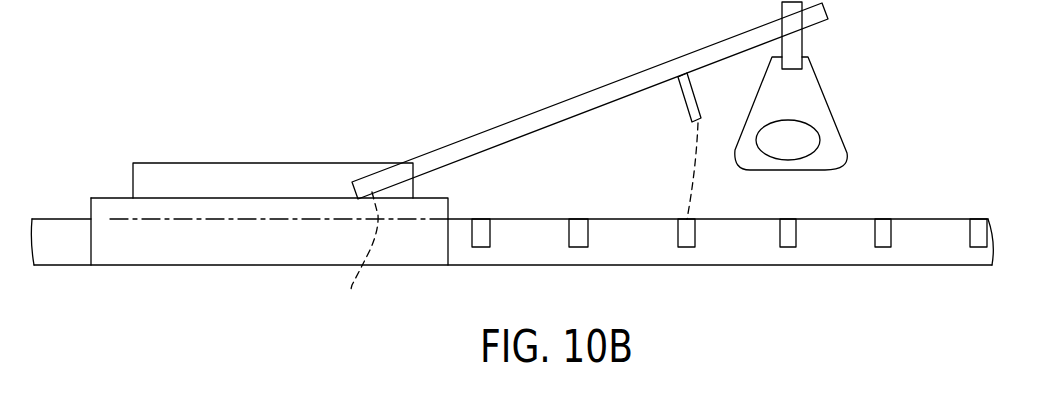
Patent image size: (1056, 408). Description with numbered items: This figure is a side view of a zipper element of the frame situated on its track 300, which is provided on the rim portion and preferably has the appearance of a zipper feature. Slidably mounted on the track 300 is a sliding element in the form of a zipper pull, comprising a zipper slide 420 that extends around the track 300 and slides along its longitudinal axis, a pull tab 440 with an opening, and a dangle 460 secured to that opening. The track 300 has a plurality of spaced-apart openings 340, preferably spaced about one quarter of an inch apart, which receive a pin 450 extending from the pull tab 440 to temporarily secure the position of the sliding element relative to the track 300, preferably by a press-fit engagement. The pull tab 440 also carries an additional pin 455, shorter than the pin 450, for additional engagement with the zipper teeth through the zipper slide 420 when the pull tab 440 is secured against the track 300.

The track 300 is at (63, 218).
The opening 340 is at (686, 236).
The zipper slide 420 is at (228, 177).
The pull tab 440 is at (565, 110).
The pin 450 is at (685, 98).
The additional pin 455 is at (357, 259).
The dangle 460 is at (835, 145).